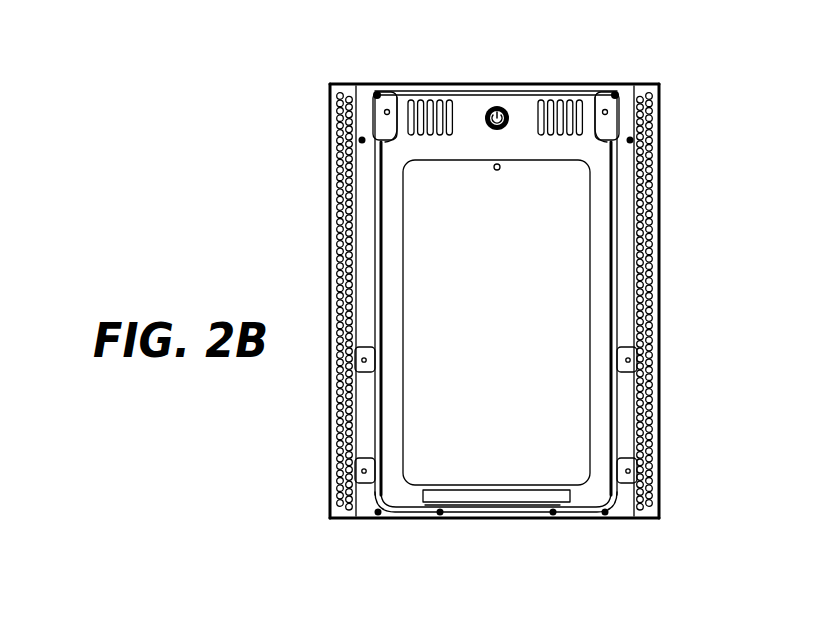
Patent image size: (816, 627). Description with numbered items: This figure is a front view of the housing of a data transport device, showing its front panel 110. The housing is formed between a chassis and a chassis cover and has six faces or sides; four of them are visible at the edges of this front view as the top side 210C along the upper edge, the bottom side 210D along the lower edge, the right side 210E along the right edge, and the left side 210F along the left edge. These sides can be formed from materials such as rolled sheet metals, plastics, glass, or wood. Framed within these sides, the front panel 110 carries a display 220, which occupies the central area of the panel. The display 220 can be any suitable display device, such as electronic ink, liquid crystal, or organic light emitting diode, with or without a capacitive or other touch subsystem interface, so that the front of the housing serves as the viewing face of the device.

The top side 210C is at (494, 85).
The bottom side 210D is at (494, 517).
The right side 210E is at (663, 199).
The left side 210F is at (327, 199).
The front panel 110 is at (578, 497).
The display 220 is at (430, 475).